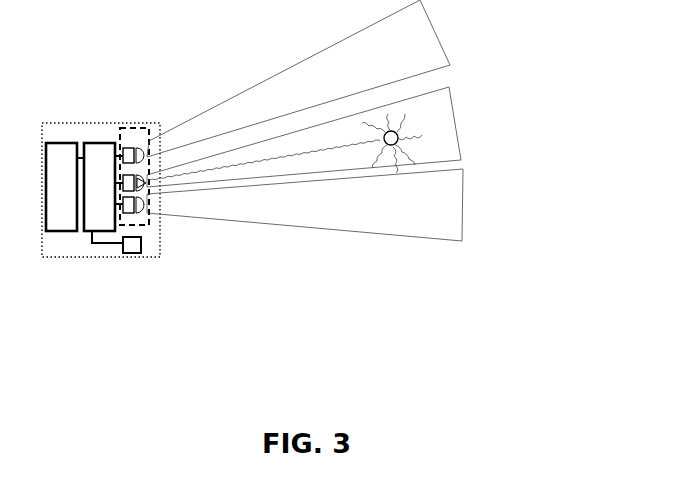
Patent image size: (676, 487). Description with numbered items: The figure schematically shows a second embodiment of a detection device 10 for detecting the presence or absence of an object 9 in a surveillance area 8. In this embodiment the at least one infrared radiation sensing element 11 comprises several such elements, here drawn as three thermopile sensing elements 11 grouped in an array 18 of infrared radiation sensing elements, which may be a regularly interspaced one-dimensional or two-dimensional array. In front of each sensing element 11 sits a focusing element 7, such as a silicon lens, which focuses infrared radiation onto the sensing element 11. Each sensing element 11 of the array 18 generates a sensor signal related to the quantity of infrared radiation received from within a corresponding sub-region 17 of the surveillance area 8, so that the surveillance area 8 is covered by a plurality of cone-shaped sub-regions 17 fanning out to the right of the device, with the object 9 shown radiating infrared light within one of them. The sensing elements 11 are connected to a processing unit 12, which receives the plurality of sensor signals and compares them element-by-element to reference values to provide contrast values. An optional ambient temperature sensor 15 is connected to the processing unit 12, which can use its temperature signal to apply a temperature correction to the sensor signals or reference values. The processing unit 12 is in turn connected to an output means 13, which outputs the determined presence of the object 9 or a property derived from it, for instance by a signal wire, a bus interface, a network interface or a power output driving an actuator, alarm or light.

The detection device 10 is at (92, 103).
The output means 13 is at (62, 231).
The processing unit 12 is at (97, 143).
The ambient temperature sensor 15 is at (135, 253).
The array of infrared radiation sensing elements 18 is at (149, 130).
The infrared radiation sensing element 11 is at (131, 148).
The focusing element 7 is at (139, 210).
The sub-region 17 is at (463, 216).
The surveillance area 8 is at (472, 265).
The object 9 is at (398, 134).